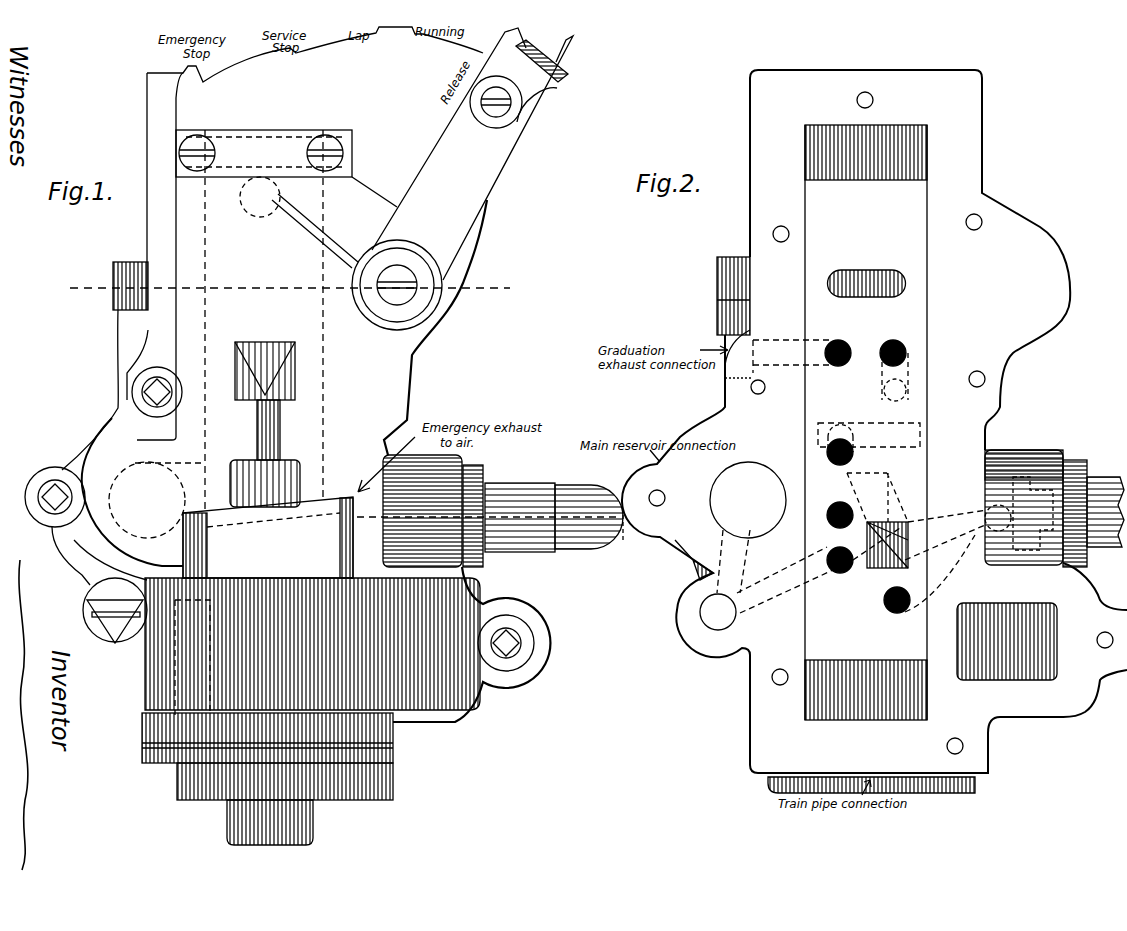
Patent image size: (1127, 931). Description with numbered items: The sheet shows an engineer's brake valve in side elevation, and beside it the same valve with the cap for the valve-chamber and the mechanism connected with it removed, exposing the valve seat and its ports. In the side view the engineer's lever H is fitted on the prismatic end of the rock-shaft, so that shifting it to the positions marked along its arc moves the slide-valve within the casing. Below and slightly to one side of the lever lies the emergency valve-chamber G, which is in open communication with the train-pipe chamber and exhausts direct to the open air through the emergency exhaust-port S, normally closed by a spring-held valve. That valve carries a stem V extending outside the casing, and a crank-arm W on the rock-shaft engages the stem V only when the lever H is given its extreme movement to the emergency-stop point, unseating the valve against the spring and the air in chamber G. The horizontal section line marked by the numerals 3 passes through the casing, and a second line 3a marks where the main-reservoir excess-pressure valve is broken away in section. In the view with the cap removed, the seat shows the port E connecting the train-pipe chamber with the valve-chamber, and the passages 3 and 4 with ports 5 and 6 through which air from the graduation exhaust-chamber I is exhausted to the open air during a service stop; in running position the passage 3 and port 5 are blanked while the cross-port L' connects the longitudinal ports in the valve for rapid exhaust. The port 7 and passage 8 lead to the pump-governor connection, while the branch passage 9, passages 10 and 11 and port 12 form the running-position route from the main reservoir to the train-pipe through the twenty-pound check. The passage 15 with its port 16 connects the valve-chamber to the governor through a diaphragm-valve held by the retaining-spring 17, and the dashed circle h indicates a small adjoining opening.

In FIG. 1, the passage 3 is at (288, 287).
In FIG. 2, the passage 3 is at (840, 426).
In FIG. 1, the section line 3a is at (498, 511).
In FIG. 2, the section line 3a is at (632, 533).
In FIG. 1, the valve stem V is at (282, 428).
In FIG. 1, the emergency exhaust-port S is at (268, 537).
In FIG. 1, the emergency valve-chamber G is at (311, 711).
In FIG. 1, the crank-arm W is at (303, 236).
In FIG. 1, the engineer's lever H is at (575, 50).
In FIG. 2, the cross-port L' is at (867, 268).
In FIG. 2, the passage 4 is at (782, 345).
In FIG. 2, the port 6 is at (846, 343).
In FIG. 2, the port 7 is at (893, 340).
In FIG. 2, the hole h is at (883, 389).
In FIG. 2, the graduation exhaust-chamber I is at (869, 435).
In FIG. 2, the port 5 is at (834, 464).
In FIG. 2, the port 12 is at (834, 503).
In FIG. 2, the retaining-spring 17 is at (836, 573).
In FIG. 2, the port 16 is at (892, 613).
In FIG. 2, the port E is at (880, 570).
In FIG. 2, the passage 10 is at (772, 557).
In FIG. 2, the passage 11 is at (792, 565).
In FIG. 2, the branch passage 9 is at (710, 617).
In FIG. 2, the passage 8 is at (940, 515).
In FIG. 2, the passage 15 is at (950, 572).